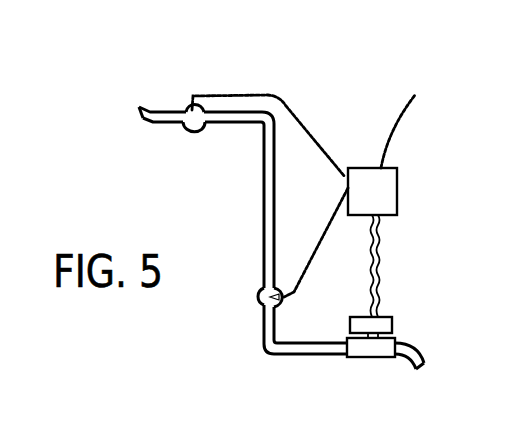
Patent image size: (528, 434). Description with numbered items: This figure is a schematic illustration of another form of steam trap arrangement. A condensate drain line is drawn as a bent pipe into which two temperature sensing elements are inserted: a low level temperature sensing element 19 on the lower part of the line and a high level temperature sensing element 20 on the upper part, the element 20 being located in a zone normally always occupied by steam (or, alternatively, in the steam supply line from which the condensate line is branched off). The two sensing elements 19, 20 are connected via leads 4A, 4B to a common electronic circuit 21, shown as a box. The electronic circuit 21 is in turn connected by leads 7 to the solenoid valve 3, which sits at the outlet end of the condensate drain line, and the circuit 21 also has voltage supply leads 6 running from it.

The high level temperature sensing element 20 is at (184, 114).
The lead 4B is at (282, 95).
The voltage supply leads 6 is at (413, 128).
The electronic circuit 21 is at (393, 194).
The leads 7 is at (395, 255).
The lead 4A is at (310, 257).
The low level temperature sensing element 19 is at (279, 306).
The solenoid valve 3 is at (373, 350).